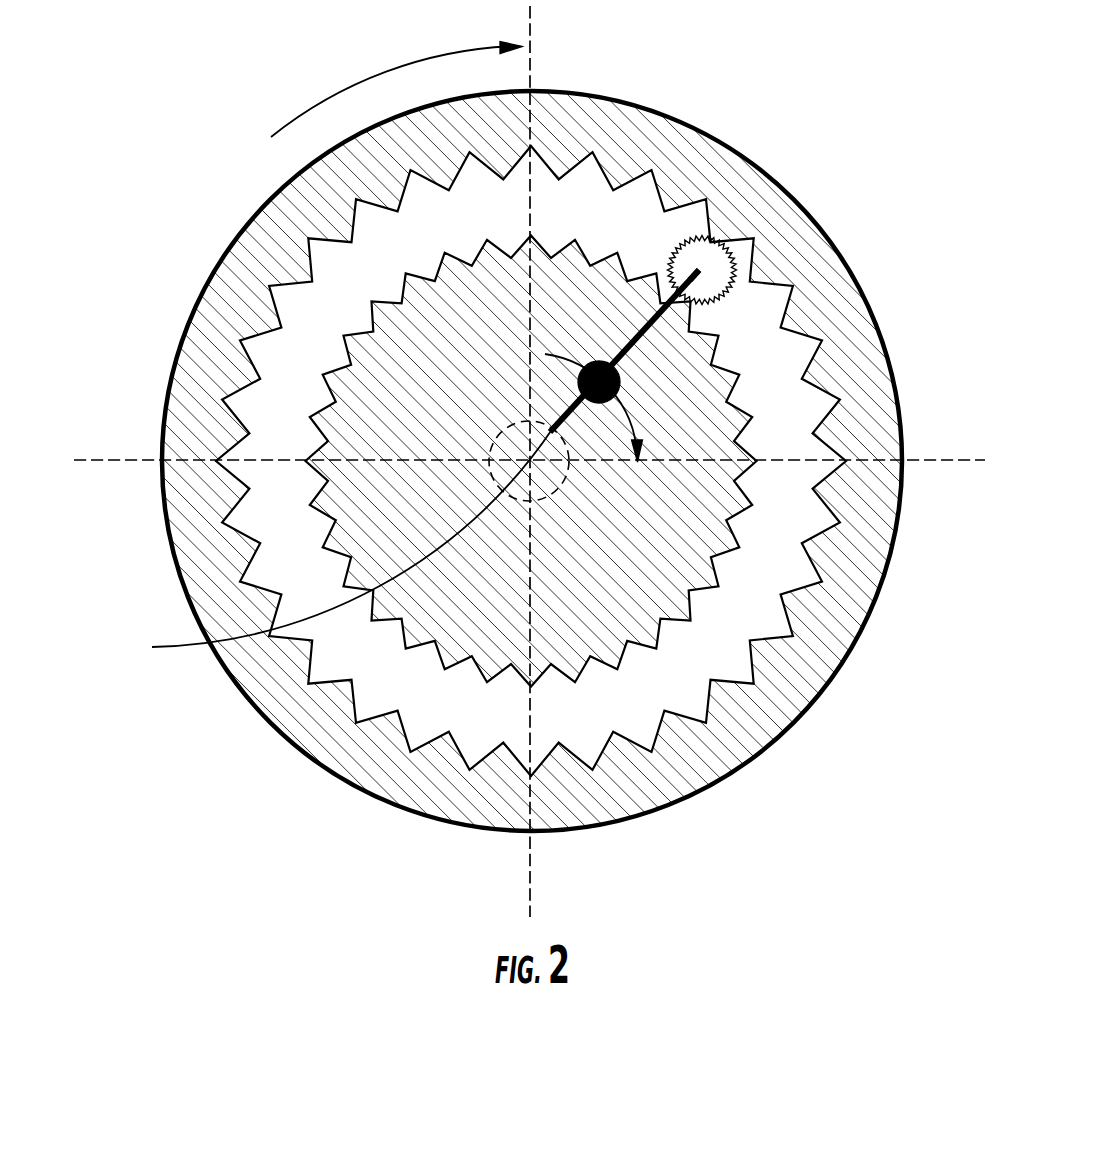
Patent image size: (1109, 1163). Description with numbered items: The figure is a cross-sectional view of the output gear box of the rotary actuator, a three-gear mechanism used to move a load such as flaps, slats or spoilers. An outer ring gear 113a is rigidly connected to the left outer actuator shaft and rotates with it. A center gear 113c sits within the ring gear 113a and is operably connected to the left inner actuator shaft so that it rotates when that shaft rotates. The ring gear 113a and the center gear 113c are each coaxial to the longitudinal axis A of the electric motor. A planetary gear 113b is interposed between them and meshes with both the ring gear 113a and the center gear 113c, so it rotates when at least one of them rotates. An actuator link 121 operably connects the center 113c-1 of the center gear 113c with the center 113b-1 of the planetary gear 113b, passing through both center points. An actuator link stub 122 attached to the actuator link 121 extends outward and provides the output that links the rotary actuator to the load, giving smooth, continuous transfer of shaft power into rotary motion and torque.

The ring gear 113a is at (805, 203).
The planetary gear 113b is at (733, 268).
The center of the planetary gear 113b-1 is at (699, 270).
The center gear 113c is at (653, 582).
The center of the center gear 113c-1 is at (527, 444).
The actuator link 121 is at (625, 352).
The actuator link stub 122 is at (622, 382).
The longitudinal axis A is at (152, 647).